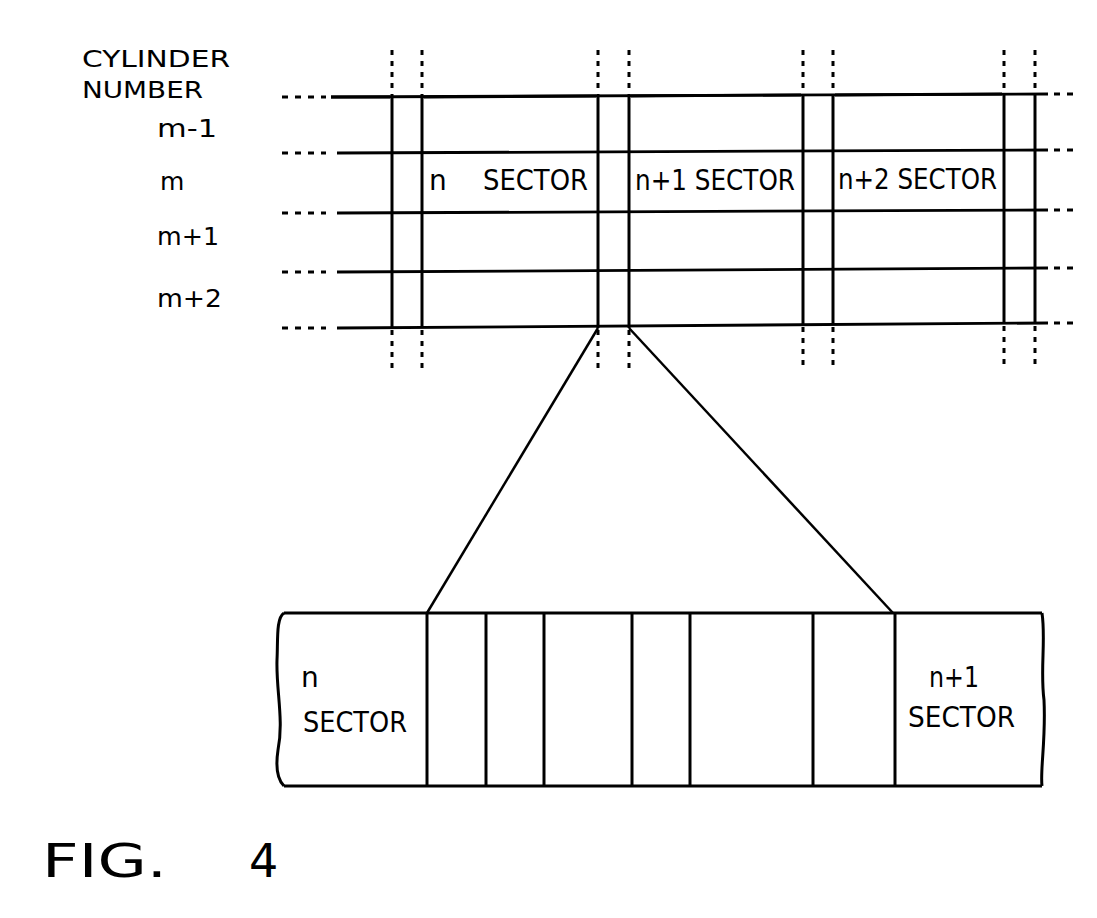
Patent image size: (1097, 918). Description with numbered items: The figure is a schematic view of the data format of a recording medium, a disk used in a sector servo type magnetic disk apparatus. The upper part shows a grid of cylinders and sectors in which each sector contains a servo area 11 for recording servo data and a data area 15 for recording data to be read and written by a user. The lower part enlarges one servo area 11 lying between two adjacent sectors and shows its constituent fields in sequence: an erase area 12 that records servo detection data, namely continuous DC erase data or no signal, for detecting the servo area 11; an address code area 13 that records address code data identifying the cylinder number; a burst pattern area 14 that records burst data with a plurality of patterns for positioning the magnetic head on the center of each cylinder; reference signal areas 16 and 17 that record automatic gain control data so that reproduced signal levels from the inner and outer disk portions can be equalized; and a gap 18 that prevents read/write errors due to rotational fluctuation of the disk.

The servo area 11 is at (410, 96).
The data area 15 is at (357, 97).
The reference signal area (AGC) 16 is at (457, 788).
The erase area 12 is at (520, 788).
The address code area 13 is at (589, 788).
The reference signal area (AGC) 17 is at (672, 788).
The burst pattern area 14 is at (762, 788).
The gap 18 is at (858, 788).